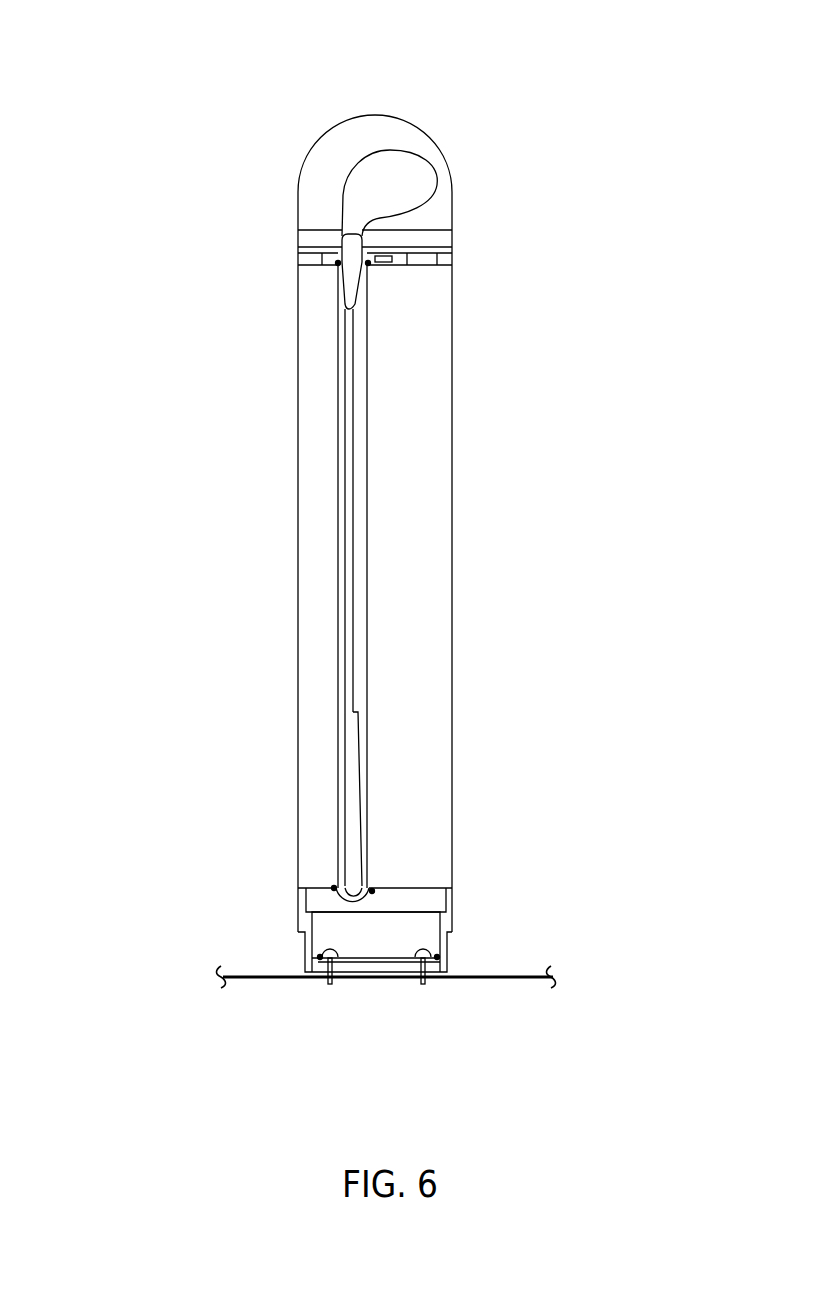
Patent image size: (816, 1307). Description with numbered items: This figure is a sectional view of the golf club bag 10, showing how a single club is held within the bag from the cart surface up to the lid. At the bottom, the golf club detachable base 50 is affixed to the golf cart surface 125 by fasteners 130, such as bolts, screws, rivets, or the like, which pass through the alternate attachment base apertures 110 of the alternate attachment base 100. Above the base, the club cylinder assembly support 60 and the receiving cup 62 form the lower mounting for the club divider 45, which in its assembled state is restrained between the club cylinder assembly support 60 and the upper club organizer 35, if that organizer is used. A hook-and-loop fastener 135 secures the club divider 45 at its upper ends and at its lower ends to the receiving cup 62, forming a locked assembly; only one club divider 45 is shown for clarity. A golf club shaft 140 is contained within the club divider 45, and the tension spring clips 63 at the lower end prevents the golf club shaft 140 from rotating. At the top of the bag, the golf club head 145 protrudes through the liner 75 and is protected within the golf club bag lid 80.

The golf club bag 10 is at (96, 157).
The golf club head 145 is at (390, 178).
The golf club bag lid 80 is at (455, 172).
The liner 75 is at (435, 247).
The upper club organizer 35 is at (435, 258).
The hook-and-loop fastener 135 is at (368, 264).
The club divider 45 is at (368, 473).
The golf club shaft 140 is at (353, 435).
The tension spring clips 63 is at (372, 886).
The receiving cup 62 is at (372, 903).
The club cylinder assembly support 60 is at (420, 901).
The golf club detachable base 50 is at (452, 936).
The alternate attachment base apertures 110 is at (320, 955).
The fasteners 130 is at (328, 985).
The alternate attachment base 100 is at (363, 960).
The golf cart surface 125 is at (510, 979).